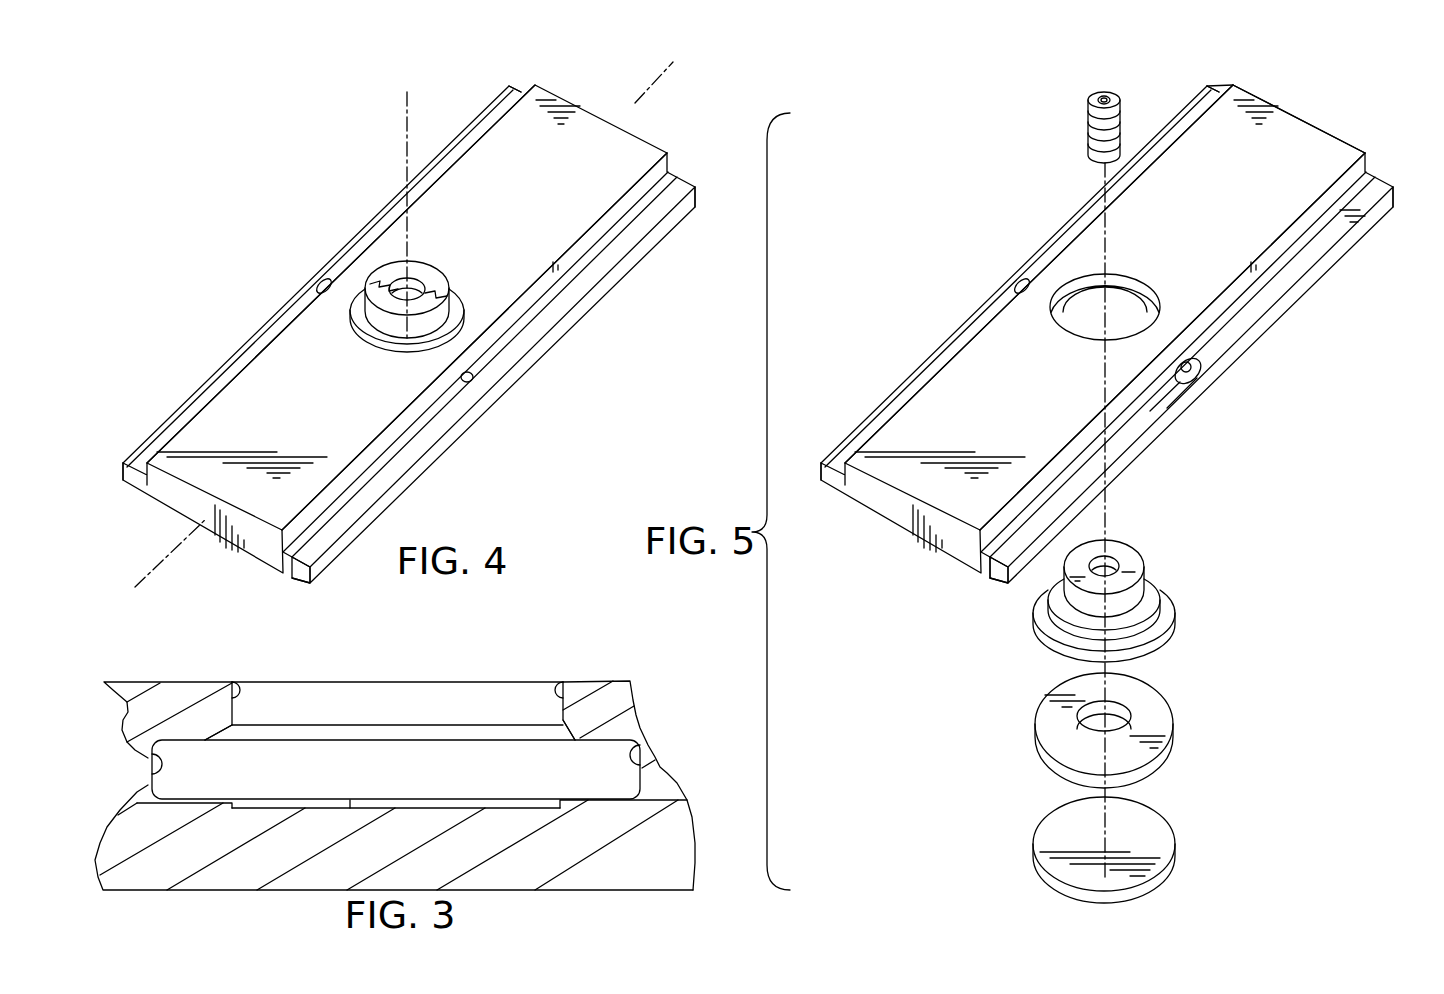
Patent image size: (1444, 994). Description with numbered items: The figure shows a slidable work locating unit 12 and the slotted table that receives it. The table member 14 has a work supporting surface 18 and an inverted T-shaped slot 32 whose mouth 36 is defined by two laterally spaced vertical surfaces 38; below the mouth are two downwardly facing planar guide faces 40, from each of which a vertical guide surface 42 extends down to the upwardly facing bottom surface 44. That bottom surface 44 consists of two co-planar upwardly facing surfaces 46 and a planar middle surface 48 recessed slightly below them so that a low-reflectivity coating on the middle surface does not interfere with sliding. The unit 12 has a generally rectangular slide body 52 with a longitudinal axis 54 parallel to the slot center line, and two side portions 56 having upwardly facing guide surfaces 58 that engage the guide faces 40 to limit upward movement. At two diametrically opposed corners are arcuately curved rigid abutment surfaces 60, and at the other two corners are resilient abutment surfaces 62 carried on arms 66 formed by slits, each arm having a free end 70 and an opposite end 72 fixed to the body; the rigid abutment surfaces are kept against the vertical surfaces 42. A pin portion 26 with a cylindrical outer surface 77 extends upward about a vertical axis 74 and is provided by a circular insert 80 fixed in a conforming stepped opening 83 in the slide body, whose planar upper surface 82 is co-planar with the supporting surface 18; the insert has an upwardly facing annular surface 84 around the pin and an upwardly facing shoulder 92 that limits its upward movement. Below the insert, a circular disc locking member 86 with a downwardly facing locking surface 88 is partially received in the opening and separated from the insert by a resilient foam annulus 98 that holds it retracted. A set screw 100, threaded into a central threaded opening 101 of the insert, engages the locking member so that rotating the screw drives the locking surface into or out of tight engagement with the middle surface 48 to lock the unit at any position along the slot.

In FIG. 4, the work locating unit 12 is at (590, 92).
In FIG. 5, the work locating unit 12 is at (1271, 92).
In FIG. 3, the table member 14 is at (606, 681).
In FIG. 3, the supporting surface 18 is at (138, 681).
In FIG. 4, the pin portion 26 is at (433, 277).
In FIG. 5, the pin portion 26 is at (1150, 575).
In FIG. 3, the slot 32 is at (290, 672).
In FIG. 3, the mouth 36 is at (472, 690).
In FIG. 3, the vertical surfaces 38 is at (236, 684).
In FIG. 3, the downwardly facing guide faces 40 is at (190, 742).
In FIG. 3, the vertical guide surface 42 is at (645, 757).
In FIG. 3, the bottom surface 44 is at (314, 788).
In FIG. 3, the upwardly facing surfaces 46 is at (210, 800).
In FIG. 3, the middle surface 48 is at (350, 806).
In FIG. 4, the slide body 52 is at (640, 158).
In FIG. 5, the slide body 52 is at (1310, 152).
In FIG. 4, the longitudinal axis 54 is at (647, 90).
In FIG. 4, the side portions 56 is at (347, 245).
In FIG. 5, the side portions 56 is at (948, 345).
In FIG. 4, the upwardly facing guide surfaces 58 is at (463, 150).
In FIG. 5, the upwardly facing guide surfaces 58 is at (1165, 134).
In FIG. 4, the rigid abutment surfaces 60 is at (118, 471).
In FIG. 5, the rigid abutment surfaces 60 is at (1395, 190).
In FIG. 4, the resilient abutment surfaces 62 is at (508, 91).
In FIG. 5, the resilient abutment surfaces 62 is at (1208, 93).
In FIG. 4, the arms 66 is at (433, 172).
In FIG. 5, the arms 66 is at (1143, 166).
In FIG. 5, the free end 70 is at (1216, 94).
In FIG. 5, the opposite end 72 is at (1196, 382).
In FIG. 4, the vertical axis 74 is at (403, 121).
In FIG. 4, the cylindrical outer surface 77 is at (463, 318).
In FIG. 5, the cylindrical outer surface 77 is at (1080, 604).
In FIG. 5, the circular insert 80 is at (1110, 545).
In FIG. 5, the upper surface 82 is at (1288, 130).
In FIG. 5, the opening 83 is at (1130, 308).
In FIG. 5, the annular surface 84 is at (1165, 597).
In FIG. 5, the locking member 86 is at (1148, 834).
In FIG. 5, the locking surface 88 is at (1160, 881).
In FIG. 5, the upwardly facing shoulder 92 is at (1174, 613).
In FIG. 5, the annulus 98 is at (1155, 717).
In FIG. 5, the set screw 100 is at (1088, 101).
In FIG. 5, the threaded opening 101 is at (1116, 561).